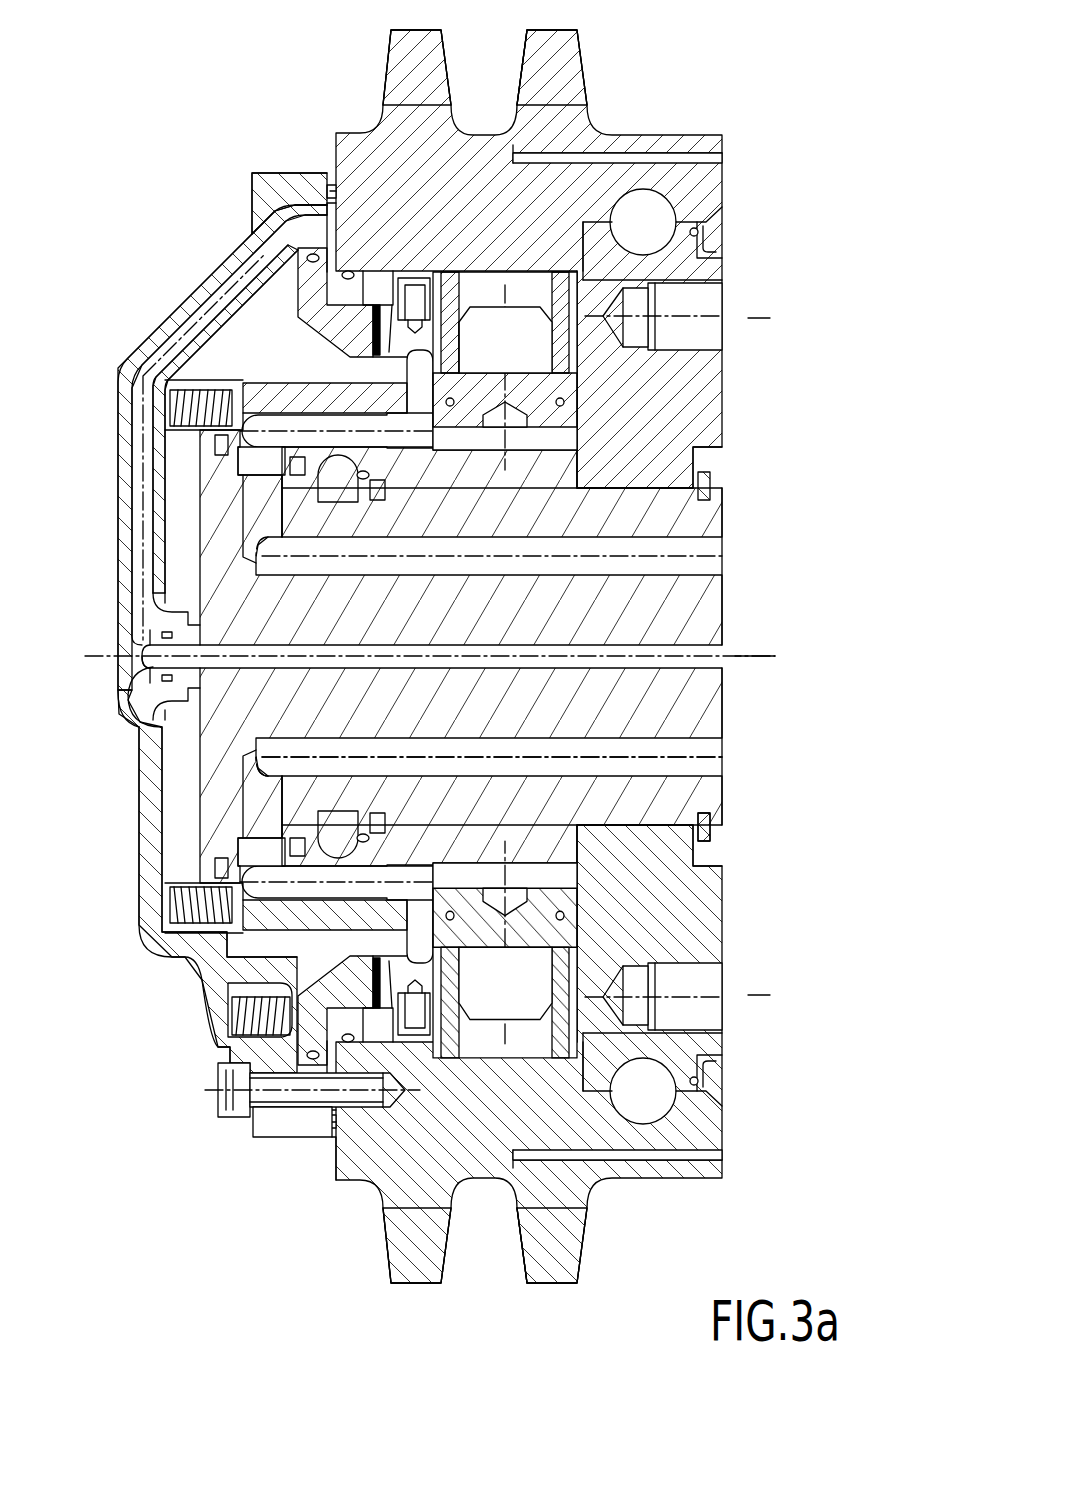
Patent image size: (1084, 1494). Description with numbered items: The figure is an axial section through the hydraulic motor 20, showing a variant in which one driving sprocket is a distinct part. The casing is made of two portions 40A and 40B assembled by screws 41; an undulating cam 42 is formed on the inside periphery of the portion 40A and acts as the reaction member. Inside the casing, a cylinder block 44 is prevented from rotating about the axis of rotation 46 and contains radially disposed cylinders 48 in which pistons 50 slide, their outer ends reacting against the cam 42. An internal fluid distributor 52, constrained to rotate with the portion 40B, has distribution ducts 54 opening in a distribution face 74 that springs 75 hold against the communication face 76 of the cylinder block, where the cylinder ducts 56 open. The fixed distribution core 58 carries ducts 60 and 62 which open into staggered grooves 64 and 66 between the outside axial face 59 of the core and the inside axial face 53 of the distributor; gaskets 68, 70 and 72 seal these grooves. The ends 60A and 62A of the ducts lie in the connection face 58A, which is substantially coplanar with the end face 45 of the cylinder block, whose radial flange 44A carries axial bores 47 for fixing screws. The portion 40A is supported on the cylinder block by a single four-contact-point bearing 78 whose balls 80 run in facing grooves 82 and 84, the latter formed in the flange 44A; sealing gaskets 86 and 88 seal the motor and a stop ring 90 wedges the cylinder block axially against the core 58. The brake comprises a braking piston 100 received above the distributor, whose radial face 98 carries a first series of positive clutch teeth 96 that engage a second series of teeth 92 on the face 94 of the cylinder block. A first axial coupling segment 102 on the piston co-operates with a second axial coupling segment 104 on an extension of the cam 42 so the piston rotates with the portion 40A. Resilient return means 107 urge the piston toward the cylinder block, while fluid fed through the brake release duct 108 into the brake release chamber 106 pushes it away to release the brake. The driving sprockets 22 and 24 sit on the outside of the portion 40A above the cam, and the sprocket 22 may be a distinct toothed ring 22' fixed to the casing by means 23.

The hydraulic motor 20 is at (760, 96).
The driving sprocket 22 is at (578, 52).
The distinct part 22' is at (495, 65).
The means 23 is at (605, 160).
The driving sprocket 24 is at (389, 48).
The portion of the casing 40A is at (688, 143).
The portion of the casing 40B is at (137, 872).
The screws 41 is at (280, 1120).
The undulating cam 42 is at (533, 277).
The cylinder block 44 is at (503, 482).
The radial flange 44A is at (700, 450).
The end face 45 is at (725, 376).
The axis of rotation 46 is at (742, 668).
The axial bores 47 is at (710, 330).
The cylinders 48 is at (578, 378).
The pistons 50 is at (543, 359).
The internal fluid distributor 52 is at (285, 390).
The inside axial face 53 is at (215, 440).
The distribution ducts 54 is at (343, 445).
The cylinder ducts 56 is at (450, 435).
The fixed distribution core 58 is at (690, 600).
The end face 58A is at (722, 645).
The outside axial face 59 is at (332, 547).
The duct 60 is at (565, 577).
The end 60A is at (722, 558).
The duct 62 is at (492, 746).
The end 62A is at (722, 752).
The groove 64 is at (276, 475).
The groove 66 is at (351, 497).
The gasket 68 is at (247, 477).
The gasket 70 is at (240, 520).
The gasket 72 is at (378, 502).
The distribution face 74 is at (405, 375).
The springs 75 is at (185, 395).
The communication face 76 is at (480, 556).
The bearing 78 is at (600, 203).
The balls 80 is at (660, 220).
The groove 82 is at (655, 196).
The groove 84 is at (648, 248).
The sealing gasket 86 is at (708, 232).
The sealing gasket 88 is at (327, 190).
The stop ring 90 is at (706, 826).
The second series of teeth 92 is at (420, 276).
The face of the cylinder block 94 is at (452, 347).
The first series of positive clutch teeth 96 is at (372, 320).
The radial face 98 is at (380, 290).
The braking piston 100 is at (313, 318).
The first axial coupling segment 102 is at (300, 300).
The second axial coupling segment 104 is at (377, 297).
The brake release chamber 106 is at (330, 216).
The resilient return means 107 is at (230, 1012).
The brake release duct 108 is at (188, 298).